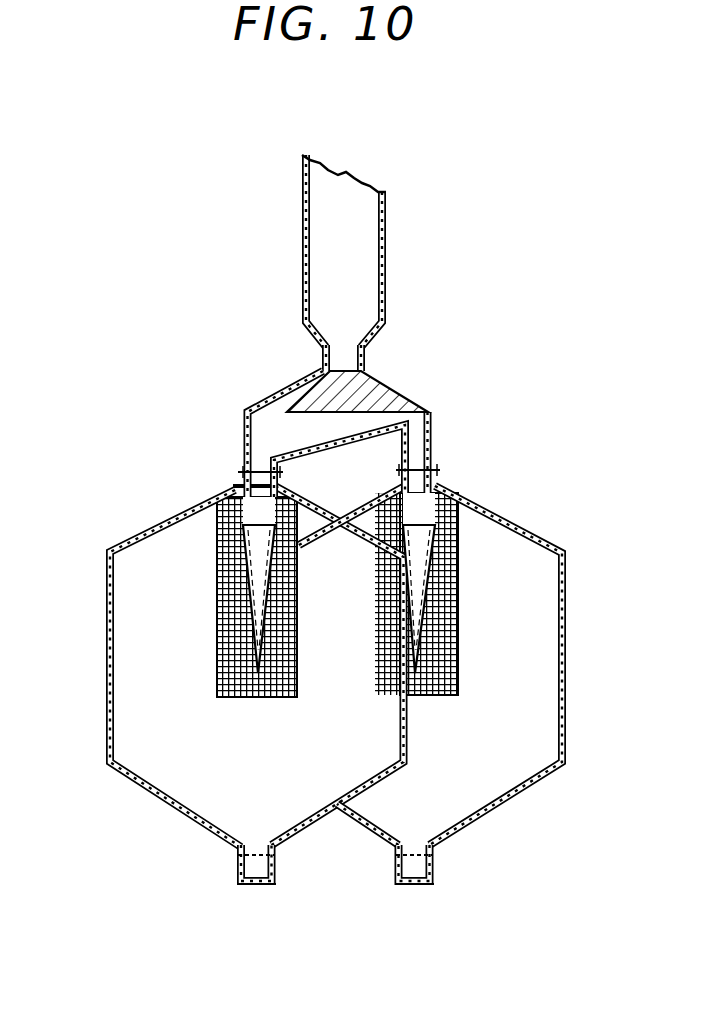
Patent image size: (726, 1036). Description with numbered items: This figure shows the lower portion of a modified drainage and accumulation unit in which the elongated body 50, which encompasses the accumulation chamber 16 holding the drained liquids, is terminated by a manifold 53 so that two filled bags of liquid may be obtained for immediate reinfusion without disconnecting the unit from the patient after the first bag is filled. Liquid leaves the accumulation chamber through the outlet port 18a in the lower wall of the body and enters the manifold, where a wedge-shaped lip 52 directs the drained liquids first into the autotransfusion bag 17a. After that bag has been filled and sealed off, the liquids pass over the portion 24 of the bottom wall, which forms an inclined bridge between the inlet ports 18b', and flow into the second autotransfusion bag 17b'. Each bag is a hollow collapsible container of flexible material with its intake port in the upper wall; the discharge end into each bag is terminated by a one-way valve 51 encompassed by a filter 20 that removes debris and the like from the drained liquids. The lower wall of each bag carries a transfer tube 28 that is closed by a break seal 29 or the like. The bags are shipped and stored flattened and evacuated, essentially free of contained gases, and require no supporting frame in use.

The accumulation chamber 16 is at (360, 290).
The elongated body 50 is at (303, 258).
The outlet port 18a is at (343, 350).
The wedge-shaped lip 52 is at (383, 389).
The manifold 53 is at (294, 388).
The portion of the bottom wall 24 is at (271, 455).
The inlet ports 18b' is at (331, 481).
The one-way valve 51 is at (246, 572).
The filter 20 is at (217, 652).
The autotransfusion bag 17a is at (106, 728).
The autotransfusion bag 17b' is at (470, 665).
The break seal 29 is at (238, 863).
The transfer tube 28 is at (277, 878).